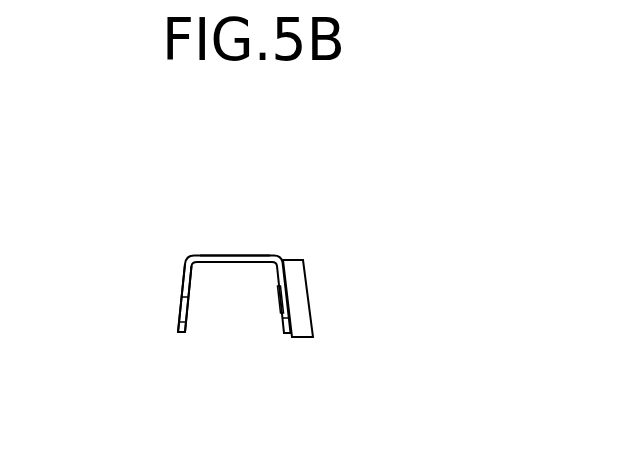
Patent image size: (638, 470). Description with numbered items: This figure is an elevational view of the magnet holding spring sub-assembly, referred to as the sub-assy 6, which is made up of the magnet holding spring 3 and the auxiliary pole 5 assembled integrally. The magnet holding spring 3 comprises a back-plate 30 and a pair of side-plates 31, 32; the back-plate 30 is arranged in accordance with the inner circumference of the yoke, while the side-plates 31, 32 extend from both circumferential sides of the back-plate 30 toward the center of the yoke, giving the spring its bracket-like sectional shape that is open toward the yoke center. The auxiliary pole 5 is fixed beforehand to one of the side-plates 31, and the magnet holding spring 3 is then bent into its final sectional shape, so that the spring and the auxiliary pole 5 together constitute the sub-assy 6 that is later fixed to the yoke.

The magnet holding spring 3 is at (204, 257).
The back-plate 30 is at (245, 256).
The side-plate 31 is at (283, 324).
The side-plate 32 is at (178, 312).
The auxiliary pole 5 is at (304, 320).
The sub-assy 6 is at (310, 247).